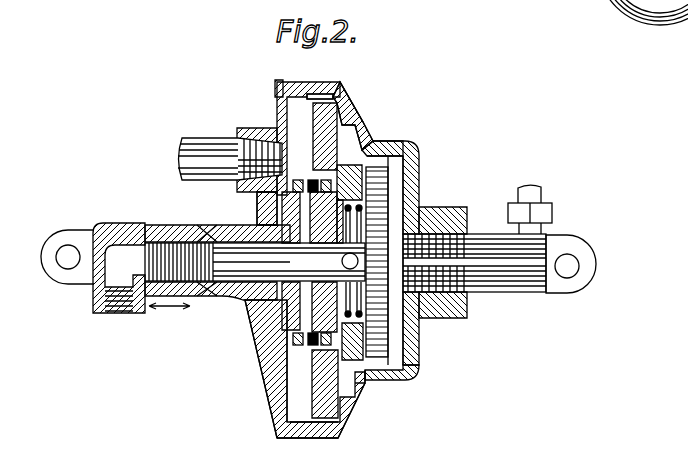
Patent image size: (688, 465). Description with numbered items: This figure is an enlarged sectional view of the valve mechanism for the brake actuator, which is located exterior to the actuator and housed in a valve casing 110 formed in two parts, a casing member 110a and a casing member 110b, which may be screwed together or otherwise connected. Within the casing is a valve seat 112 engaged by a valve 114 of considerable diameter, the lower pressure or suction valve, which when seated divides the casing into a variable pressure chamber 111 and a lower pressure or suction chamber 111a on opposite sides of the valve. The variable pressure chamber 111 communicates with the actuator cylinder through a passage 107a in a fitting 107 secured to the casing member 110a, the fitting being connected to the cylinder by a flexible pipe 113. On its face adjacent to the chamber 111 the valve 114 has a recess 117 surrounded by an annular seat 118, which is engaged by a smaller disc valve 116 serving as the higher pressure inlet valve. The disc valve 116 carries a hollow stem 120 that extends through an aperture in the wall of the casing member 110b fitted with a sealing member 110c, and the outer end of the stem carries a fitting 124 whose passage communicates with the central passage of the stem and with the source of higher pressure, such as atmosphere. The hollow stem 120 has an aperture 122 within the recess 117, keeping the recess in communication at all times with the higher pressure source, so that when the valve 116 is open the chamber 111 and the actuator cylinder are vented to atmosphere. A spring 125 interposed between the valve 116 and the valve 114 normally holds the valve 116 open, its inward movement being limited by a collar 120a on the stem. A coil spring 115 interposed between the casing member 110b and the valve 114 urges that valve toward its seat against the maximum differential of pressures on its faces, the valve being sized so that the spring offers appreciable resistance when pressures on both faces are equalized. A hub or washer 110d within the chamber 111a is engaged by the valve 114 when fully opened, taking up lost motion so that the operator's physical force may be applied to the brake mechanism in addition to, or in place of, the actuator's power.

The rod end eye 107 is at (576, 287).
The shaft extension 107a is at (511, 300).
The housing left half 110 is at (309, 250).
The inclined housing wall 110a is at (361, 122).
The housing flange 110b is at (277, 86).
The housing hub 110c is at (254, 224).
The housing side wall 110d is at (263, 336).
The housing right half 111 is at (395, 198).
The input shaft 111a is at (292, 120).
The gasket 112 is at (338, 97).
The lock nut 113 is at (537, 194).
The flange joint 114 is at (347, 117).
The bottom wall 115 is at (268, 380).
The friction disc 116 is at (382, 180).
The spring pins 117 is at (352, 316).
The housing channel 118 is at (370, 158).
The hub bushing 120 is at (228, 300).
The axial clearance 120a is at (207, 297).
The threaded shaft 122 is at (341, 262).
The left rod end cup 124 is at (107, 225).
The housing step 125 is at (366, 384).